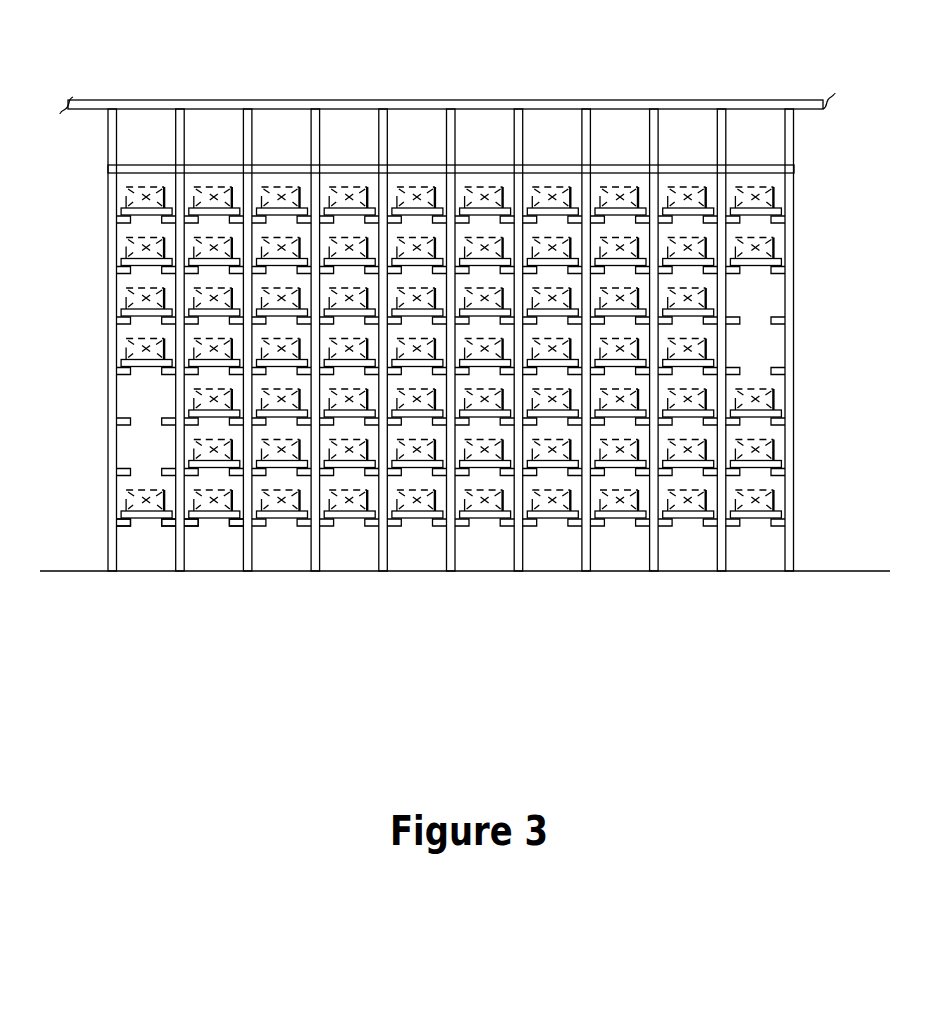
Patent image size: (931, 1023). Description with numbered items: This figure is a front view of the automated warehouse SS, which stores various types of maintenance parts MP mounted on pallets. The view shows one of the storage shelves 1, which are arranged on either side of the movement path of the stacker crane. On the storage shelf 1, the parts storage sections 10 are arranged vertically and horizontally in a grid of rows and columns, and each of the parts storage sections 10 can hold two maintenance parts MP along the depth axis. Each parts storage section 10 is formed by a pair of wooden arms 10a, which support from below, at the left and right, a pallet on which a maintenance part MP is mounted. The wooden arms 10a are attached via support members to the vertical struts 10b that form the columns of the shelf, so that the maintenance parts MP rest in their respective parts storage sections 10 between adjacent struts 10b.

The storage shelf 1 is at (311, 82).
The automated warehouse SS is at (243, 80).
The maintenance part MP is at (126, 198).
The parts storage section 10 is at (451, 381).
The wooden arm 10a is at (160, 540).
The strut 10b is at (108, 348).